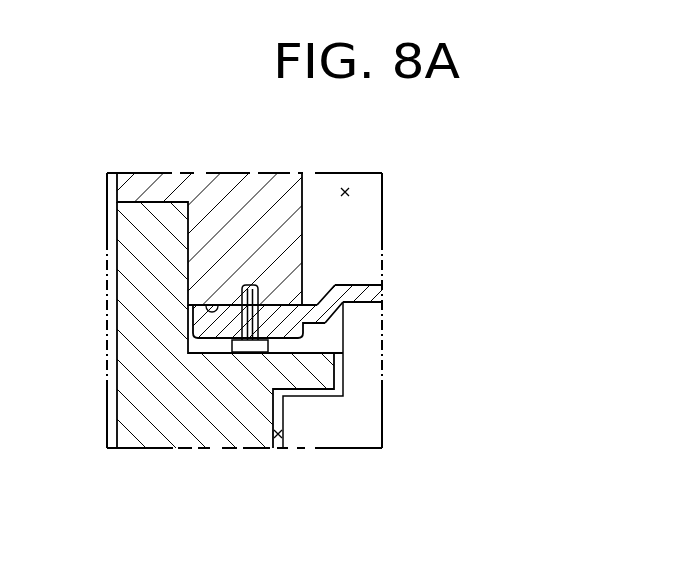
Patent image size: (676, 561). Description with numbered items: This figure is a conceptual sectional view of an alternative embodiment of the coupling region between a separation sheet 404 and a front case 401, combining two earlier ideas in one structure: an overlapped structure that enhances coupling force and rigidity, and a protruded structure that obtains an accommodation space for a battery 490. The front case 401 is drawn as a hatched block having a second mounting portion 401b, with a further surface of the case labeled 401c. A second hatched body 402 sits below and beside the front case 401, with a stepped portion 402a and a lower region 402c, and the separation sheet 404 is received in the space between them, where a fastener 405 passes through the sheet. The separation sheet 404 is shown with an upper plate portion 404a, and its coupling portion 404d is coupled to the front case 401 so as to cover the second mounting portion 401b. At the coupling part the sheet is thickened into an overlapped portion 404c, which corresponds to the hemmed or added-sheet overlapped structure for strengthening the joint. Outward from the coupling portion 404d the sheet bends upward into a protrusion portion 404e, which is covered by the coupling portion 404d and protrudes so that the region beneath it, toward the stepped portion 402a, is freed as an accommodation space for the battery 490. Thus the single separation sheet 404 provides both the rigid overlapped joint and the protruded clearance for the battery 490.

The front case 401 is at (137, 188).
The second mounting portion 401b is at (206, 306).
The outer surface of first housing block 401c is at (345, 192).
The second housing block 402 is at (137, 325).
The stepped portion of second housing block 402a is at (307, 372).
The outer surface of second housing block 402c is at (278, 434).
The separation sheet 404 is at (327, 287).
The upper plate portion of sealing member 404a is at (262, 303).
The overlapped portion 404c is at (325, 323).
The coupling portion 404d is at (297, 315).
The protrusion portion 404e is at (367, 294).
The fastening bolt 405 is at (259, 308).
The battery 490 is at (320, 420).